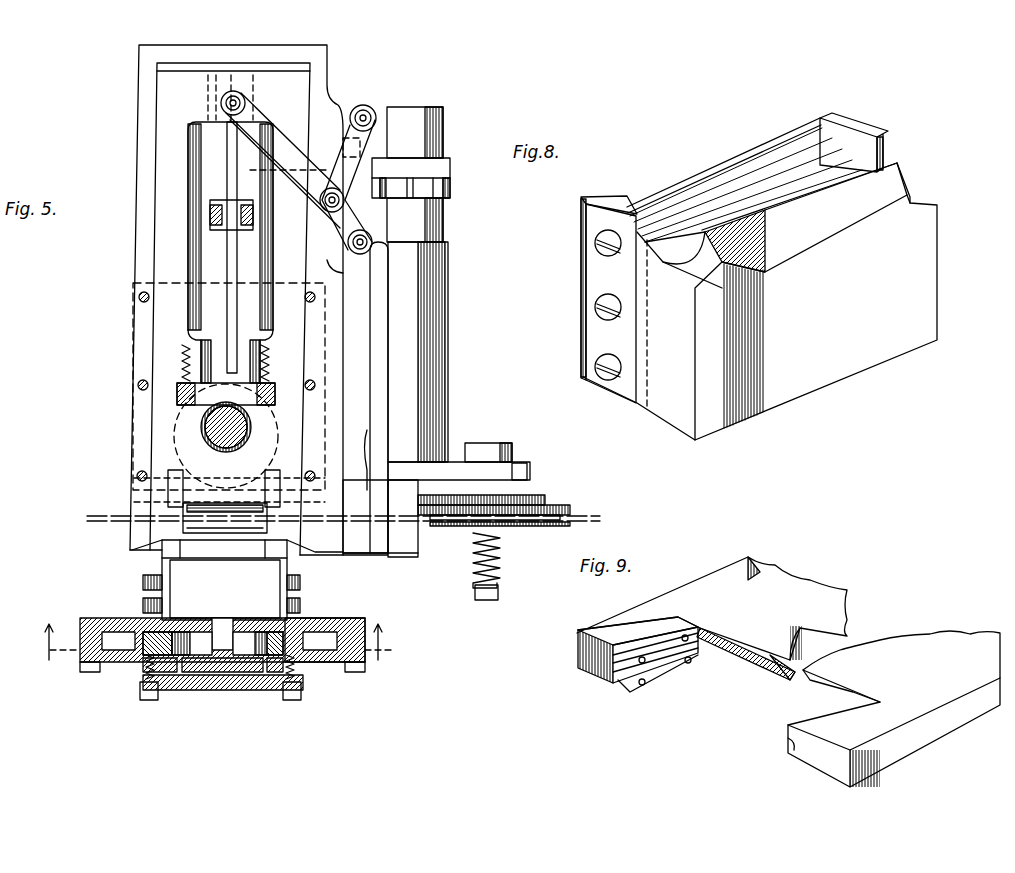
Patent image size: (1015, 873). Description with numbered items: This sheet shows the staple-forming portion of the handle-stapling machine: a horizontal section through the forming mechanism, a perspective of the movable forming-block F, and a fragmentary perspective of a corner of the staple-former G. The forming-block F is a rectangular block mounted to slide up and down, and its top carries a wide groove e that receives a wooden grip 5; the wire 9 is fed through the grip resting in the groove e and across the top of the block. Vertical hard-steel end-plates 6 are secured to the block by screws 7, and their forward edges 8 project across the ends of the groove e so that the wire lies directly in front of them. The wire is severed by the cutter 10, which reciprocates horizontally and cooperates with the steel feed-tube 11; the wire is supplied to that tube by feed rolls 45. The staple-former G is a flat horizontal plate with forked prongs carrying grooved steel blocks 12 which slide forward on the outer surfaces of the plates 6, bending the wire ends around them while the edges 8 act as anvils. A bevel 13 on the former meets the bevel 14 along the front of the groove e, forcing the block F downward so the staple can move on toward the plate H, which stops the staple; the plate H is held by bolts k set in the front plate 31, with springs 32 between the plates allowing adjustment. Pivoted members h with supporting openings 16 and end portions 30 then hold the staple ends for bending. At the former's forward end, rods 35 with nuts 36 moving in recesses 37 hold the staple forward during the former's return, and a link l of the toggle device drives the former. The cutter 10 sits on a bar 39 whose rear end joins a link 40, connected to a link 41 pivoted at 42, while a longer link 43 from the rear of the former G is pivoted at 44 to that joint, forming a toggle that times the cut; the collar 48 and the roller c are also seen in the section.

In FIG. 5, the wooden grip 5 is at (220, 533).
In FIG. 5, the end-plates 6 is at (160, 553).
In FIG. 8, the end-plates 6 is at (853, 126).
In FIG. 8, the screws 7 is at (600, 300).
In FIG. 8, the edges 8 is at (658, 220).
In FIG. 5, the wire 9 is at (165, 493).
In FIG. 9, the wire 9 is at (612, 627).
In FIG. 5, the cutter 10 is at (365, 470).
In FIG. 5, the feed-tube 11 is at (397, 547).
In FIG. 5, the grooved steel blocks 12 is at (170, 480).
In FIG. 9, the grooved steel blocks 12 is at (622, 663).
In FIG. 9, the bevel 13 is at (753, 652).
In FIG. 5, the bevel 14 is at (232, 507).
In FIG. 8, the bevel 14 is at (873, 190).
In FIG. 5, the supporting openings 16 is at (517, 508).
In FIG. 5, the end portions 30 is at (222, 645).
In FIG. 5, the front plate 31 is at (333, 665).
In FIG. 5, the springs 32 is at (147, 665).
In FIG. 5, the rods 35 is at (177, 390).
In FIG. 5, the nuts 36 is at (177, 400).
In FIG. 5, the recesses 37 is at (177, 387).
In FIG. 5, the bar 39 is at (358, 320).
In FIG. 5, the link 40 is at (350, 220).
In FIG. 5, the link 41 is at (355, 150).
In FIG. 5, the pivot 42 is at (367, 107).
In FIG. 5, the longer link 43 is at (267, 110).
In FIG. 5, the pivot 44 is at (323, 207).
In FIG. 5, the feed rolls 45 is at (560, 530).
In FIG. 5, the ring 48 is at (445, 188).
In FIG. 5, the staple-former G is at (305, 97).
In FIG. 9, the staple-former G is at (792, 593).
In FIG. 5, the forming-block F is at (243, 540).
In FIG. 8, the forming-block F is at (822, 343).
In FIG. 5, the plate H is at (245, 707).
In FIG. 5, the roller c is at (197, 440).
In FIG. 8, the groove e is at (713, 210).
In FIG. 5, the pivoted members h is at (140, 620).
In FIG. 5, the bolts k is at (152, 687).
In FIG. 5, the link l is at (230, 160).